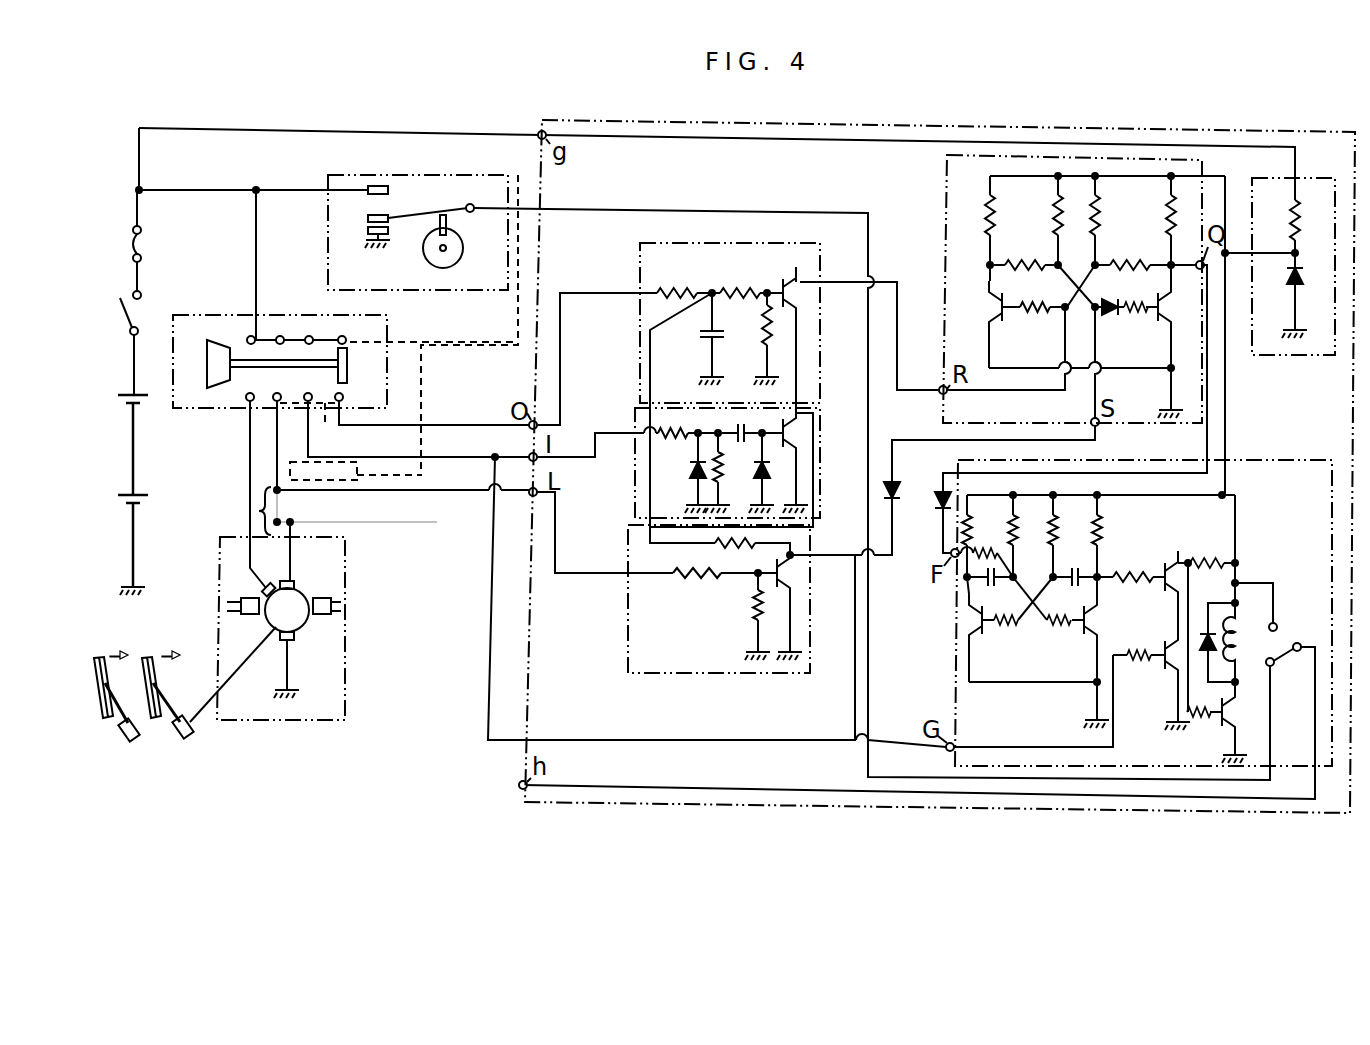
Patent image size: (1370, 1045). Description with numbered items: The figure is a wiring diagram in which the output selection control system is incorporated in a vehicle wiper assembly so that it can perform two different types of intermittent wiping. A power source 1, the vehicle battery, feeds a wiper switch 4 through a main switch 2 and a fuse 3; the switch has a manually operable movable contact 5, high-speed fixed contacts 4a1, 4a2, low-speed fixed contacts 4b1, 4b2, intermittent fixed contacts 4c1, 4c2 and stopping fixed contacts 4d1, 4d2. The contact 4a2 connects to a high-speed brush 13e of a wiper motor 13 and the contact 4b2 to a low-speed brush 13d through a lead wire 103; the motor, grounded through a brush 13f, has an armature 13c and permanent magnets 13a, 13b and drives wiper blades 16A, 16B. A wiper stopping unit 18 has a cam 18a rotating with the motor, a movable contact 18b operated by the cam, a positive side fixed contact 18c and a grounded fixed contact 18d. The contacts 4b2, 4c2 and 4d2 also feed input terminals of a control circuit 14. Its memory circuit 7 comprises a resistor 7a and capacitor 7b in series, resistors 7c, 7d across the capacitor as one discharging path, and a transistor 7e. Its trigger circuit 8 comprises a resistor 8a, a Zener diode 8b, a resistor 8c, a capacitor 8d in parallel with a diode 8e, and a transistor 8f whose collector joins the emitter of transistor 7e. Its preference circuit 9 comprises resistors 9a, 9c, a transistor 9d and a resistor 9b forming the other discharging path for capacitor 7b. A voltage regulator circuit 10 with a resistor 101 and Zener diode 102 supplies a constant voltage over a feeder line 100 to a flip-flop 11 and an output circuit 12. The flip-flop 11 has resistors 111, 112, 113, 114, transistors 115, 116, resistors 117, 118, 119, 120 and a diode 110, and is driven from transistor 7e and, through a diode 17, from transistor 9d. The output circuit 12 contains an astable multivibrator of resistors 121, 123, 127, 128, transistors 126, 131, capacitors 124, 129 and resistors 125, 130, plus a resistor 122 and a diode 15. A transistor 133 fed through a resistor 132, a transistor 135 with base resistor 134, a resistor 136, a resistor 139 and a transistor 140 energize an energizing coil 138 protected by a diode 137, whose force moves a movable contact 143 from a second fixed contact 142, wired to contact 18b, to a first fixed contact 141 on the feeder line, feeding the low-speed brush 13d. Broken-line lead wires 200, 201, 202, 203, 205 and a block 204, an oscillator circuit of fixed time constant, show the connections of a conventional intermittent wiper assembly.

The power source 1 is at (131, 447).
The main switch 2 is at (125, 316).
The fuse 3 is at (131, 242).
The wiper switch 4 is at (228, 410).
The movable contact 5 is at (214, 358).
The high-speed fixed contact 4a1 is at (265, 331).
The low-speed fixed contact 4b1 is at (295, 331).
The intermittent fixed contact 4c1 is at (325, 331).
The stopping fixed contact 4d1 is at (358, 331).
The high-speed fixed contact 4a2 is at (261, 386).
The low-speed fixed contact 4b2 is at (290, 386).
The intermittent fixed contact 4c2 is at (320, 386).
The stopping fixed contact 4d2 is at (345, 392).
The memory circuit 7 is at (638, 385).
The resistor 7a is at (673, 283).
The capacitor 7b is at (703, 331).
The resistor 7c is at (742, 283).
The resistor 7d is at (762, 340).
The transistor 7e is at (805, 300).
The trigger circuit 8 is at (632, 505).
The resistor 8a is at (668, 428).
The Zener diode 8b is at (690, 477).
The resistor 8c is at (745, 440).
The capacitor 8d is at (757, 412).
The diode 8e is at (756, 478).
The transistor 8f is at (800, 433).
The preference circuit 9 is at (628, 580).
The resistor 9a is at (692, 578).
The resistor 9b is at (715, 548).
The resistor 9c is at (754, 607).
The transistor 9d is at (795, 578).
The voltage regulator circuit 10 is at (1310, 358).
The flip-flop 11 is at (945, 230).
The output circuit 12 is at (958, 655).
The wiper motor 13 is at (345, 670).
The permanent magnet 13a is at (252, 616).
The permanent magnet 13b is at (322, 616).
The armature 13c is at (308, 598).
The low-speed brush 13d is at (295, 583).
The high-speed brush 13e is at (268, 587).
The brush 13f is at (296, 645).
The control circuit 14 is at (720, 803).
The diode 15 is at (937, 510).
The wiper blade 16A is at (97, 707).
The wiper blade 16B is at (146, 707).
The diode 17 is at (897, 490).
The wiper stopping unit 18 is at (482, 175).
The cam 18a is at (463, 255).
The movable contact 18b is at (389, 222).
The positive side fixed contact 18c is at (390, 190).
The fixed contact 18d is at (366, 231).
The feeder line 100 is at (1238, 173).
The resistor 101 is at (1300, 230).
The Zener diode 102 is at (1303, 280).
The lead wire 103 is at (262, 511).
The diode 110 is at (1113, 315).
The resistor 111 is at (993, 218).
The resistor 112 is at (1055, 225).
The resistor 113 is at (1098, 220).
The resistor 114 is at (1168, 227).
The transistor 115 is at (995, 310).
The transistor 116 is at (1174, 349).
The resistor 117 is at (1030, 312).
The resistor 118 is at (1125, 268).
The resistor 119 is at (1025, 268).
The resistor 120 is at (1138, 315).
The resistor 121 is at (988, 519).
The resistor 122 is at (993, 550).
The resistor 123 is at (1018, 533).
The capacitor 124 is at (1000, 583).
The resistor 125 is at (1010, 622).
The transistor 126 is at (975, 634).
The resistor 127 is at (1060, 533).
The resistor 128 is at (1103, 535).
The capacitor 129 is at (1078, 568).
The resistor 130 is at (1072, 625).
The transistor 131 is at (1092, 644).
The resistor 132 is at (1125, 563).
The transistor 133 is at (1172, 566).
The resistor 134 is at (1135, 650).
The transistor 135 is at (1170, 668).
The resistor 136 is at (1205, 562).
The diode 137 is at (1202, 628).
The energizing coil 138 is at (1245, 635).
The resistor 139 is at (1198, 718).
The transistor 140 is at (1237, 712).
The first fixed contact 141 is at (1287, 617).
The second fixed contact 142 is at (1272, 668).
The movable contact 143 is at (1297, 652).
The lead wire 200 is at (436, 346).
The lead wire 201 is at (275, 468).
The lead wire 202 is at (330, 429).
The lead wire 203 is at (302, 508).
The block 204 is at (377, 476).
The lead wire 205 is at (422, 425).